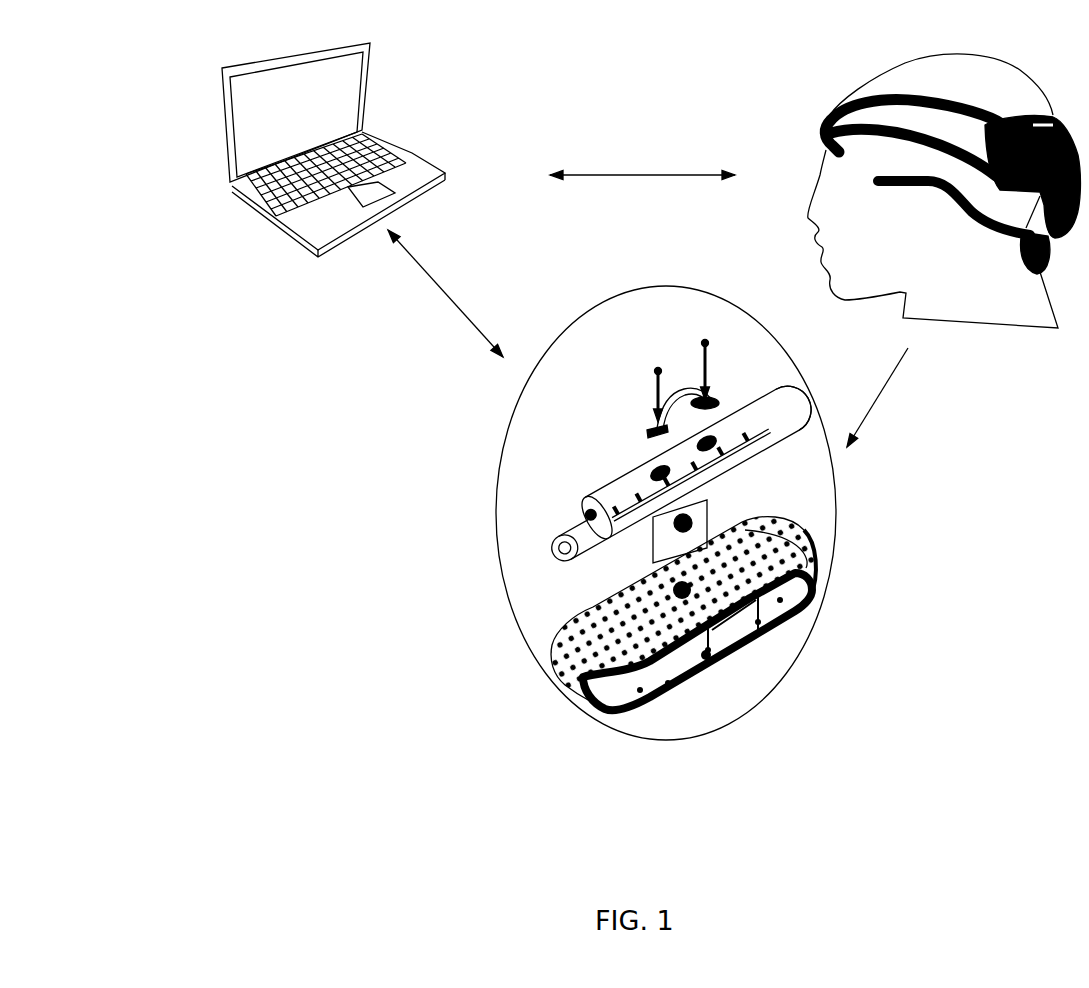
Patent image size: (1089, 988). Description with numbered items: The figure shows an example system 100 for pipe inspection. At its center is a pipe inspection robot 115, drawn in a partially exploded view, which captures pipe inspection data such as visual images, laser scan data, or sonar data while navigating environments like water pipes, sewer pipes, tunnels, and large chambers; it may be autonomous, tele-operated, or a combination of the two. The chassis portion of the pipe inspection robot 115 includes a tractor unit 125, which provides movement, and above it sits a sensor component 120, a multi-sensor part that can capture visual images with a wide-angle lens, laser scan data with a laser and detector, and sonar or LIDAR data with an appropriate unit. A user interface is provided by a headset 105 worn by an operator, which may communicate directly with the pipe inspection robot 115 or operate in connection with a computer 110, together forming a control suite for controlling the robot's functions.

The system 100 is at (178, 48).
The headset 105 is at (834, 91).
The computer 110 is at (266, 251).
The pipe inspection robot 115 is at (486, 533).
The sensor component 120 is at (754, 478).
The tractor unit 125 is at (551, 622).